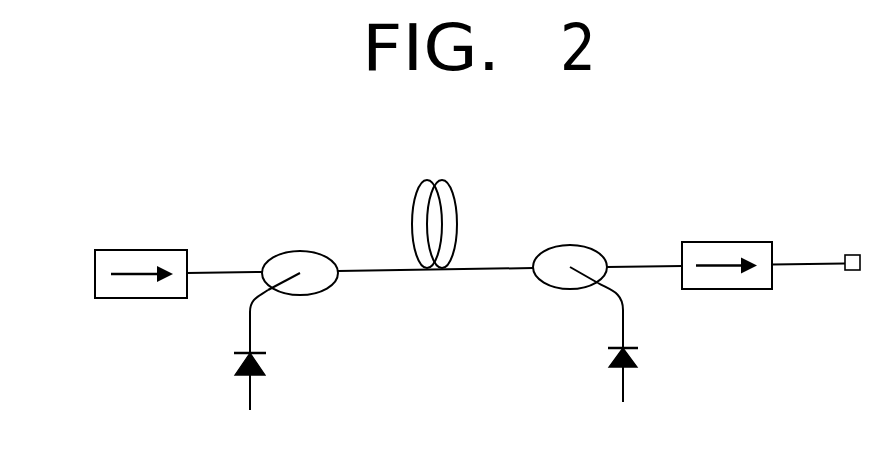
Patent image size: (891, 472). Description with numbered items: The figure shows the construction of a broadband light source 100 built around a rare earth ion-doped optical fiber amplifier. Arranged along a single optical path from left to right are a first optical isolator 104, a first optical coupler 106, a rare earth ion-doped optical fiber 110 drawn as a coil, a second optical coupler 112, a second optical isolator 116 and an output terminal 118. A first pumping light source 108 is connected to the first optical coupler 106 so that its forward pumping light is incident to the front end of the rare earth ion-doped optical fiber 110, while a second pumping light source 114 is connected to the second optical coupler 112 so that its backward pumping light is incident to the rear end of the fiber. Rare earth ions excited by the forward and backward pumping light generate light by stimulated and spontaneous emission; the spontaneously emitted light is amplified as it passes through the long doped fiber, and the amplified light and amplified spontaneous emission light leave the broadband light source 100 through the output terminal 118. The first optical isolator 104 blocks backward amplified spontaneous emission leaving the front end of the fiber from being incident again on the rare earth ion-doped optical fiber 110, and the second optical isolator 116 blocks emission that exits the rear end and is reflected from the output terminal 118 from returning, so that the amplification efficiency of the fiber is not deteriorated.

The broadband light source 100 is at (457, 428).
The first optical isolator 104 is at (133, 258).
The first optical coupler 106 is at (297, 258).
The first pumping light source 108 is at (224, 350).
The rare earth ion-doped optical fiber 110 is at (448, 180).
The second optical coupler 112 is at (573, 250).
The second pumping light source 114 is at (642, 342).
The second optical isolator 116 is at (723, 246).
The output terminal 118 is at (853, 272).